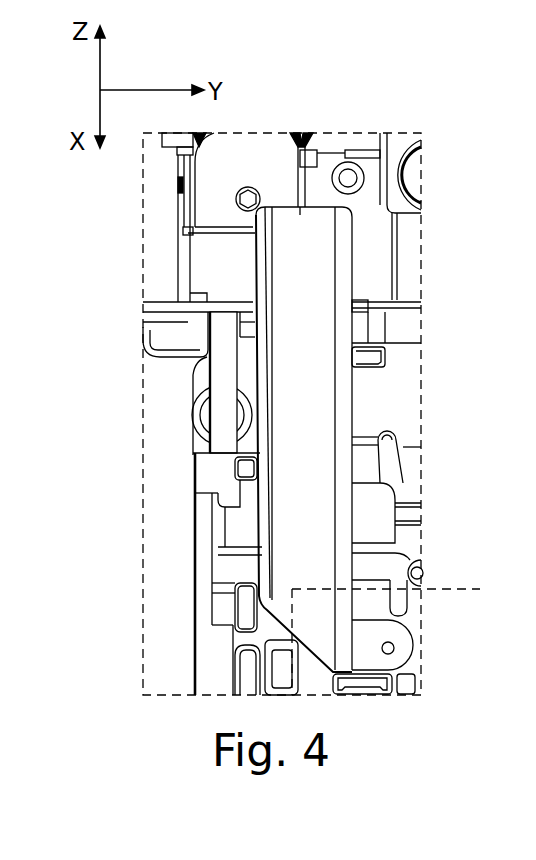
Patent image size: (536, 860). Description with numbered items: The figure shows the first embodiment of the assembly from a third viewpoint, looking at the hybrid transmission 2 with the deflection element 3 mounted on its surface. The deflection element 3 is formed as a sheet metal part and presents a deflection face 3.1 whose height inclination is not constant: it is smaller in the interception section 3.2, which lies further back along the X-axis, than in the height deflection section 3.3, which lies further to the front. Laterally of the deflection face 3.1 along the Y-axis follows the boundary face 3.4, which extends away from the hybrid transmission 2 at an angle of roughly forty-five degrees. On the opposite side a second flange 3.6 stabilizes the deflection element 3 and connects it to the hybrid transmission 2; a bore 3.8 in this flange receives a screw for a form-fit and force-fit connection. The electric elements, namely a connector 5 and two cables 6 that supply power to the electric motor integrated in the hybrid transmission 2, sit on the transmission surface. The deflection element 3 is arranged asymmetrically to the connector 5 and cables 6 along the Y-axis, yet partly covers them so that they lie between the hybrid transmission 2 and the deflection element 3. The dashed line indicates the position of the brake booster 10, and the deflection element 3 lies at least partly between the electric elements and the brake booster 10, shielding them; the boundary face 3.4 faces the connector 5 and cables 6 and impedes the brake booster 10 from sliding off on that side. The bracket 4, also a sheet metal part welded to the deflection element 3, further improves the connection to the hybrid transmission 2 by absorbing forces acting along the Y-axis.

The hybrid transmission 2 is at (381, 268).
The deflection element 3 is at (280, 380).
The deflection face 3.1 is at (324, 452).
The interception section 3.2 is at (284, 573).
The height deflection section 3.3 is at (283, 232).
The boundary face 3.4 is at (272, 300).
The second flange 3.6 is at (362, 400).
The bore 3.8 is at (402, 650).
The bracket 4 is at (150, 305).
The connector 5 is at (240, 179).
The cables 6 is at (223, 377).
The brake booster 10 is at (443, 589).